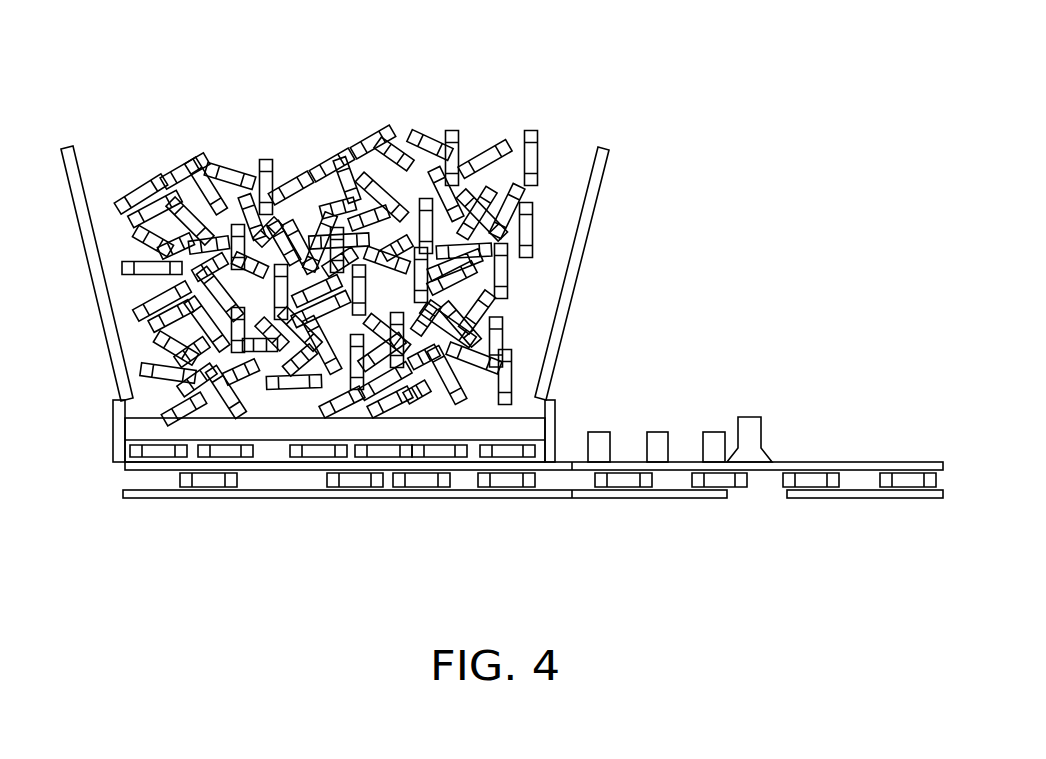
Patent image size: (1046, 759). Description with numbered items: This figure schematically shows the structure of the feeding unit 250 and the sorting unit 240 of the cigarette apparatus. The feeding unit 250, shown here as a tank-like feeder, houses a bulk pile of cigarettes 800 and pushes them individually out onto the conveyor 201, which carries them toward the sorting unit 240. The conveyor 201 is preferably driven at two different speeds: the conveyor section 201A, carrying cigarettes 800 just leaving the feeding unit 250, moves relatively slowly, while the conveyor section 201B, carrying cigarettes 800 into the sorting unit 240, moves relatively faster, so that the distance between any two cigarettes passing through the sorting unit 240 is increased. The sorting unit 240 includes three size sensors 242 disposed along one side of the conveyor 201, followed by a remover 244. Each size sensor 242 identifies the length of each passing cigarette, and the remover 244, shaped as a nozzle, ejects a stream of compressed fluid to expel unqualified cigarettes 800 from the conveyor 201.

The feeding unit 250 is at (167, 92).
The conveyor 201 is at (692, 555).
The conveyor section 201A is at (572, 503).
The conveyor section 201B is at (725, 503).
The cigarette 800 is at (200, 480).
The sorting unit 240 is at (780, 335).
The size sensor 242 is at (599, 440).
The remover 244 is at (751, 428).